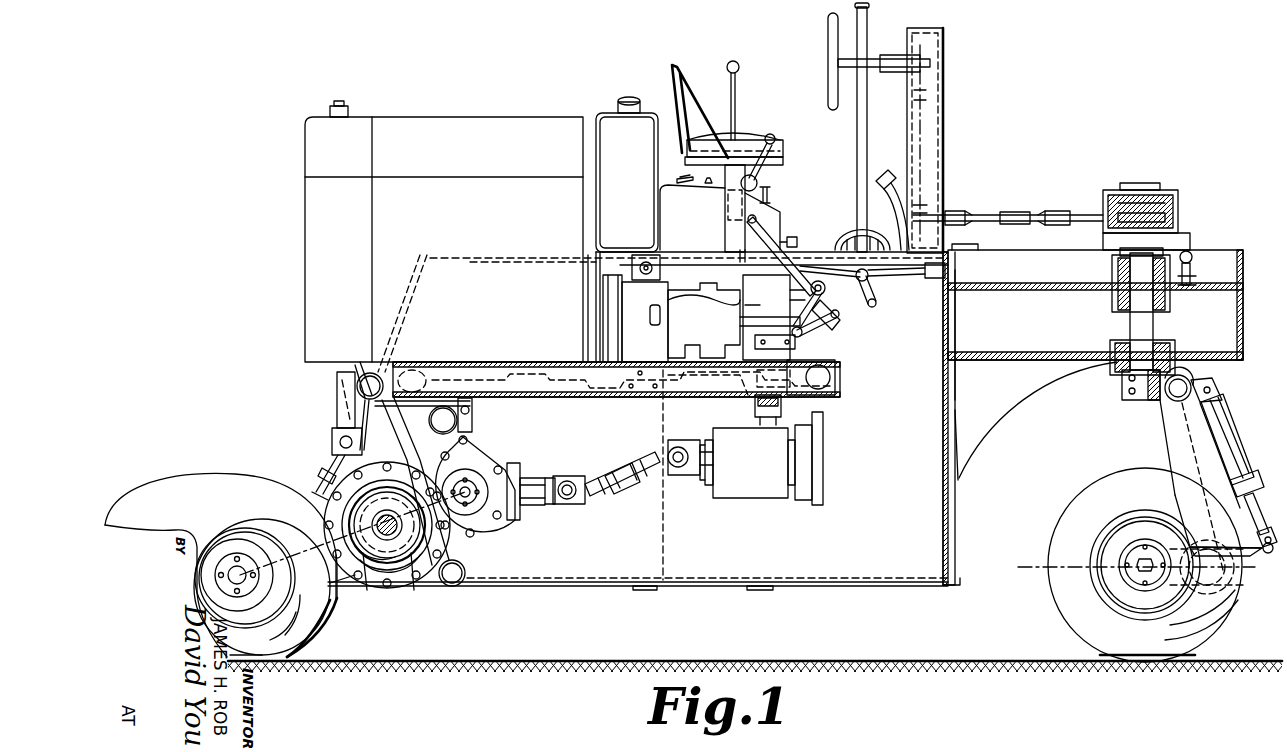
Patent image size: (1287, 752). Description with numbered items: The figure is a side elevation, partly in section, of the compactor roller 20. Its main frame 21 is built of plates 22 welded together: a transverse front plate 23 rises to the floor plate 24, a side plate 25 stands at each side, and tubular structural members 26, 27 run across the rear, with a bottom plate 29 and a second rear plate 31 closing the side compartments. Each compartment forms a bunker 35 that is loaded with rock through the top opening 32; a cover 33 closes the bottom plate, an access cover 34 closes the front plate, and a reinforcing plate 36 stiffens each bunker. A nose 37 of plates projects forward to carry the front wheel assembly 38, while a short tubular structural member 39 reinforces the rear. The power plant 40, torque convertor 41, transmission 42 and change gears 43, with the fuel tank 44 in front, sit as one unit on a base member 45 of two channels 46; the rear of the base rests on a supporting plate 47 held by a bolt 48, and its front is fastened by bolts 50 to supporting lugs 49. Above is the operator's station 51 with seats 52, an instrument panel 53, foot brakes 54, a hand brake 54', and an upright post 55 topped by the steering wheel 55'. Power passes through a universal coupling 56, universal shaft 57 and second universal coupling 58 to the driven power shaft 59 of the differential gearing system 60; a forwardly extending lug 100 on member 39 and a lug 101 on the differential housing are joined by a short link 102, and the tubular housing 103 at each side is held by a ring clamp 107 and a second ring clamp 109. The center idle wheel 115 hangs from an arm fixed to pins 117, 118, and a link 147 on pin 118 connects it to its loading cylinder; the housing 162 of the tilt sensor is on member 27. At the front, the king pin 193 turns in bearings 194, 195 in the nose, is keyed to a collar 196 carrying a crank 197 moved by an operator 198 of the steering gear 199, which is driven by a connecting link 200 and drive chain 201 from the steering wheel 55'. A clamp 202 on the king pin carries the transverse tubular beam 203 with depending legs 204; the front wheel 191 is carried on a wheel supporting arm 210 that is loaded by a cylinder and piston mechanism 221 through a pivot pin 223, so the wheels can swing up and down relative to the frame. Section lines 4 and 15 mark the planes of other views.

The section line 4- 4 is at (118, 610).
The section line 15- 15 is at (1018, 566).
The compactor roller 20 is at (956, 152).
The main frame 21 is at (960, 493).
The plates 22 is at (1003, 358).
The transverse front plate 23 is at (956, 568).
The floor plate 24 is at (905, 272).
The side plate 25 is at (432, 586).
The tubular structural member 26 is at (462, 584).
The second tubular structural member 27 is at (383, 376).
The bottom plate 29 is at (543, 586).
The second rear plate 31 is at (407, 280).
The opening 32 is at (533, 257).
The cover 33 is at (691, 590).
The access cover 34 is at (956, 418).
The bunker 35 is at (841, 562).
The reinforcing plate 36 is at (668, 565).
The nose 37 is at (1244, 326).
The front wheel assembly 38 is at (1262, 472).
The short tubular structural member 39 is at (437, 428).
The power plant 40 is at (483, 130).
The torque convertor 41 is at (648, 300).
The transmission 42 is at (755, 490).
The change gears 43 is at (710, 318).
The fuel tank 44 is at (612, 130).
The base member 45 is at (584, 396).
The channels 46 is at (522, 386).
The supporting plate 47 is at (420, 388).
The bolt 48 is at (400, 408).
The supporting lugs 49 is at (787, 404).
The bolts 50 is at (757, 384).
The operator's station 51 is at (816, 128).
The seats 52 is at (743, 133).
The instrument panel 53 is at (764, 218).
The foot brakes 54 is at (892, 187).
The hand brake 54' is at (885, 127).
The upright post 55 is at (980, 140).
The steering wheel 55' is at (796, 61).
The universal coupling 56 is at (683, 476).
The universal shaft 57 is at (627, 478).
The second universal coupling 58 is at (567, 505).
The driven power shaft 59 is at (548, 478).
The differential gearing system 60 is at (493, 538).
The forwardly extending lug 100 is at (478, 390).
The lug 101 is at (475, 455).
The short link 102 is at (472, 411).
The tubular housing 103 is at (372, 548).
The ring clamp 107 is at (402, 550).
The second ring clamp 109 is at (392, 560).
The center idle wheel 115 is at (195, 492).
The pin 117 is at (330, 600).
The pin 118 is at (302, 490).
The link 147 is at (320, 470).
The housing 162 is at (337, 380).
The front wheel 191 is at (1112, 632).
The king pin 193 is at (1153, 327).
The bearing 194 is at (1115, 352).
The bearing 195 is at (1118, 298).
The collar 196 is at (1120, 277).
The crank 197 is at (1194, 272).
The operator 198 is at (1192, 250).
The steering gear 199 is at (1145, 188).
The connecting link 200 is at (1020, 213).
The drive chain 201 is at (923, 125).
The clamp 202 is at (1145, 405).
The transverse tubular beam 203 is at (1193, 378).
The leg 204 is at (1178, 445).
The wheel supporting arm 210 is at (1251, 560).
The cylinder and piston mechanism 221 is at (1236, 444).
The pivot pin 223 is at (1270, 554).